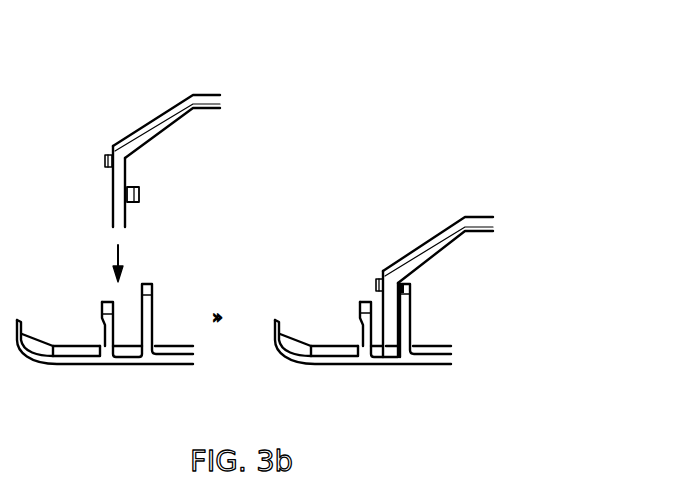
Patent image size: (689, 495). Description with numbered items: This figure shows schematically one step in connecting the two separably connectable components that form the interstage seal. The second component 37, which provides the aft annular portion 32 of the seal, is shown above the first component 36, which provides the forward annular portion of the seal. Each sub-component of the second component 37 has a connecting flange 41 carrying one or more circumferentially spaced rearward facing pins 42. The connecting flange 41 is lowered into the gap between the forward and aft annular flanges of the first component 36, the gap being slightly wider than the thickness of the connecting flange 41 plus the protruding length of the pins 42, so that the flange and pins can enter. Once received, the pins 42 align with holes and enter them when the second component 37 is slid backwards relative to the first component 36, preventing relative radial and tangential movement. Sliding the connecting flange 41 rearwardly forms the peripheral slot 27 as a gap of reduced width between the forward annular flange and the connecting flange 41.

The aft annular portion 32 is at (152, 137).
The second component 37 is at (186, 136).
The connecting flange 41 is at (112, 213).
The rearward facing pins 42 is at (148, 183).
The first component 36 is at (120, 380).
The peripheral slot 27 is at (375, 318).